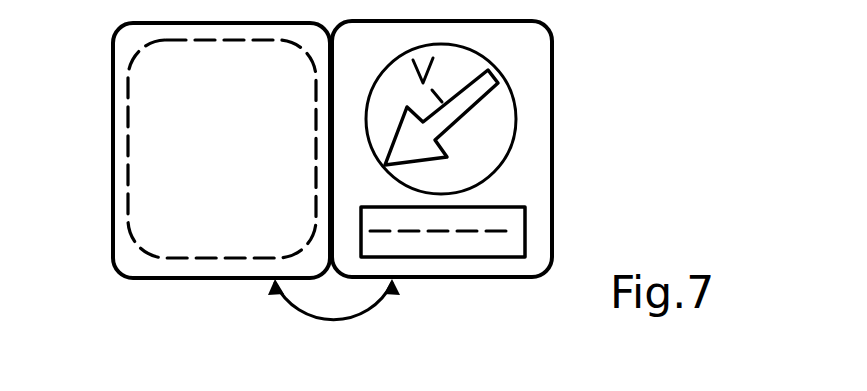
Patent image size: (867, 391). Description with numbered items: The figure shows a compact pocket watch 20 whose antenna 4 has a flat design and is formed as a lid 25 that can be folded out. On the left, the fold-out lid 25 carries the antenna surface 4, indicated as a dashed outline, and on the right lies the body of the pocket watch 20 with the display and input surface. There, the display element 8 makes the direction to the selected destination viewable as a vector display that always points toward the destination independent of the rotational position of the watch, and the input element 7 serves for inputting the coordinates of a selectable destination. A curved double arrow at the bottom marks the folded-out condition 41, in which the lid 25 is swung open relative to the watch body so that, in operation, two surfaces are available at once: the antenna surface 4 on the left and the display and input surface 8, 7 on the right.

The antenna 4 is at (168, 46).
The input element 7 is at (510, 218).
The display element 8 is at (517, 127).
The pocket watch 20 is at (553, 52).
The lid 25 is at (113, 235).
The folded-out condition 41 is at (309, 318).